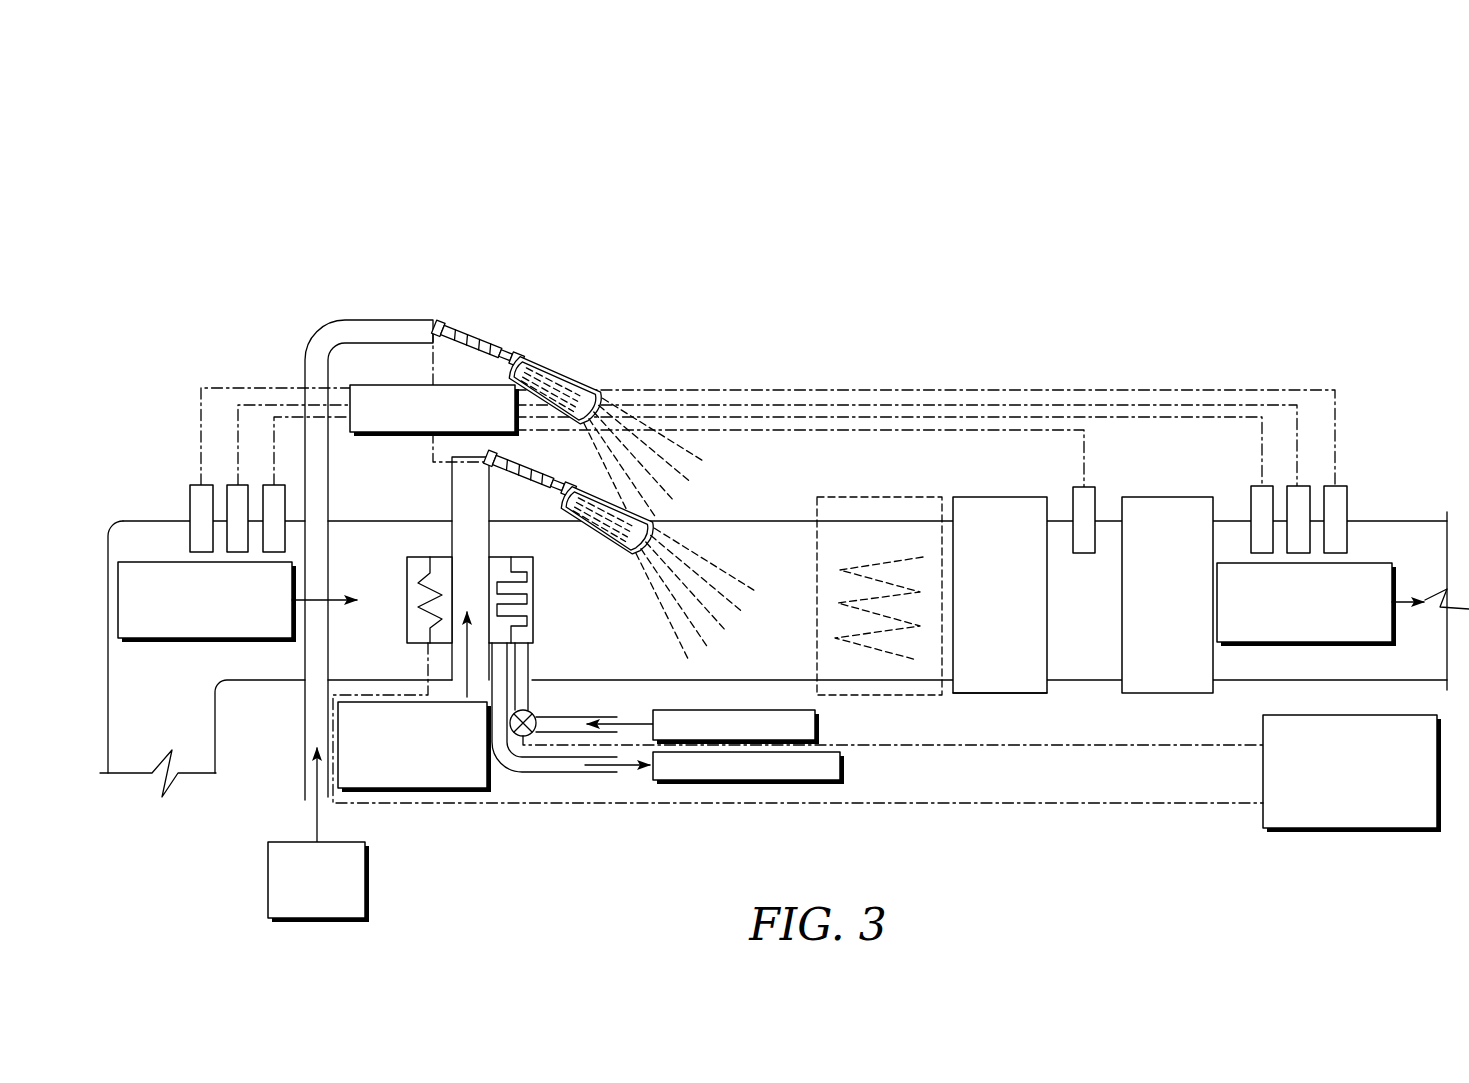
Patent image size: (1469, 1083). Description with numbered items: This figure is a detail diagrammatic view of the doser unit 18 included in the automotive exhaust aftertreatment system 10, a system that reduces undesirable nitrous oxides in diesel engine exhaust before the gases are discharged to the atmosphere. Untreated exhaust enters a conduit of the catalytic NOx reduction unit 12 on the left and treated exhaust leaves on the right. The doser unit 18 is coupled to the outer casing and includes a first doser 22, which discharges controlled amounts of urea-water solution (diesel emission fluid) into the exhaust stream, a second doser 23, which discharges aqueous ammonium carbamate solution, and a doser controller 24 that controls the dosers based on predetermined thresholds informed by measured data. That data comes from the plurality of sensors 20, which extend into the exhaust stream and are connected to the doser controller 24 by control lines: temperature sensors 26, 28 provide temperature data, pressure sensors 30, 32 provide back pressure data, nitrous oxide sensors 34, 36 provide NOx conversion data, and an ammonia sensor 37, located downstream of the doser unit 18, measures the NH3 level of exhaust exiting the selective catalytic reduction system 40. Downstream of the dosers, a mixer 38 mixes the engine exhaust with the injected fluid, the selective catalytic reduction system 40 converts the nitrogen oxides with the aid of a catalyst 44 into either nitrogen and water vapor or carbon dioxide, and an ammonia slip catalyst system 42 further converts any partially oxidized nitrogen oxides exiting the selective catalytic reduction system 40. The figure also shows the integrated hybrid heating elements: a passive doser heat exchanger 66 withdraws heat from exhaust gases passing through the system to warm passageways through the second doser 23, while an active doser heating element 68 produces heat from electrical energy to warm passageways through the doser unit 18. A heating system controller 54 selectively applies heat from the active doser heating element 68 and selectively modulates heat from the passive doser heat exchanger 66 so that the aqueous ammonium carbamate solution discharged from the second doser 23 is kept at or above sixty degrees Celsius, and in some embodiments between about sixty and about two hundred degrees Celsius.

The automotive exhaust aftertreatment system 10 is at (784, 516).
The catalytic NOx reduction unit 12 is at (943, 233).
The doser unit 18 is at (793, 427).
The plurality of sensors 20 is at (780, 424).
The first doser 22 is at (483, 348).
The second doser 23 is at (537, 477).
The doser controller 24 is at (422, 384).
The temperature sensor 26 is at (190, 508).
The temperature sensor 28 is at (1251, 507).
The pressure sensor 30 is at (227, 502).
The pressure sensor 32 is at (1313, 502).
The nitrous oxide sensor 34 is at (264, 516).
The nitrous oxide sensor 36 is at (1350, 497).
The ammonia sensor 37 is at (1095, 500).
The mixer 38 is at (840, 497).
The selective catalytic reduction system 40 is at (990, 497).
The ammonia slip catalyst system 42 is at (1155, 497).
The catalyst 44 is at (1012, 694).
The heating system controller 54 is at (1440, 775).
The passive doser heat exchanger 66 is at (533, 625).
The active doser heating element 68 is at (433, 557).